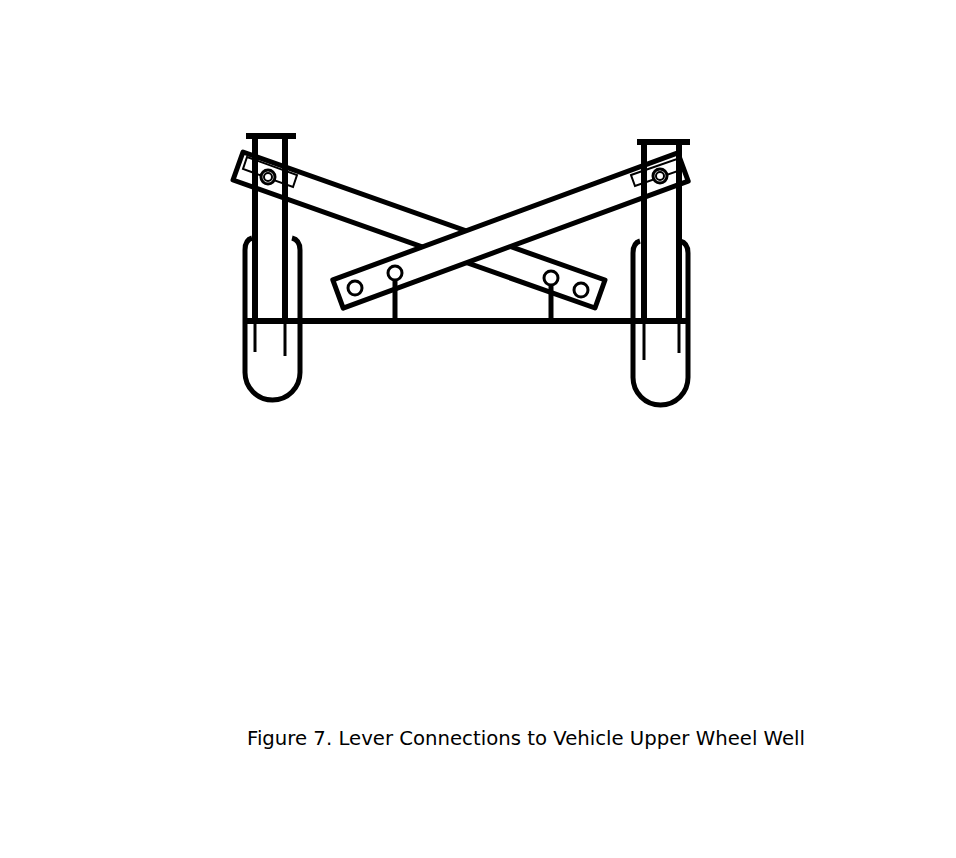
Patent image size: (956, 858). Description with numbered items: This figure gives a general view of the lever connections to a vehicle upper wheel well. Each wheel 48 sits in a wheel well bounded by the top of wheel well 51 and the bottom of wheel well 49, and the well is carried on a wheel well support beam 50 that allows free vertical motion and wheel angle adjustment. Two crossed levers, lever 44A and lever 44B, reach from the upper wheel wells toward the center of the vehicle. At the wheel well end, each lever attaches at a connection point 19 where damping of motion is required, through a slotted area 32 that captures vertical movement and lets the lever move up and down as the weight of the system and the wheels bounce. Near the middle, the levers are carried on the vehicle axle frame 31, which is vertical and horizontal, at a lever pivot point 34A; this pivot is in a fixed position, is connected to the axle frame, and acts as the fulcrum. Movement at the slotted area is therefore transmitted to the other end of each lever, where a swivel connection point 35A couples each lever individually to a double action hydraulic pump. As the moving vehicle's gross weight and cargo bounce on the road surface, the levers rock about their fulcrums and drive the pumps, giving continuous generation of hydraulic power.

The connection point from lever to wheel well 19 is at (640, 167).
The slotted area for lever movements 32 is at (290, 185).
The lever 1 44A is at (387, 198).
The lever 2 44B is at (585, 226).
The lever pivot point 34A is at (404, 281).
The vehicle axle frame 31 is at (552, 329).
The swivel connection point for double action hydraulic pump 35A is at (361, 298).
The wheel 48 is at (294, 401).
The bottom of wheel well 49 is at (270, 333).
The wheel well support beam 50 is at (249, 227).
The top of wheel well 51 is at (267, 132).